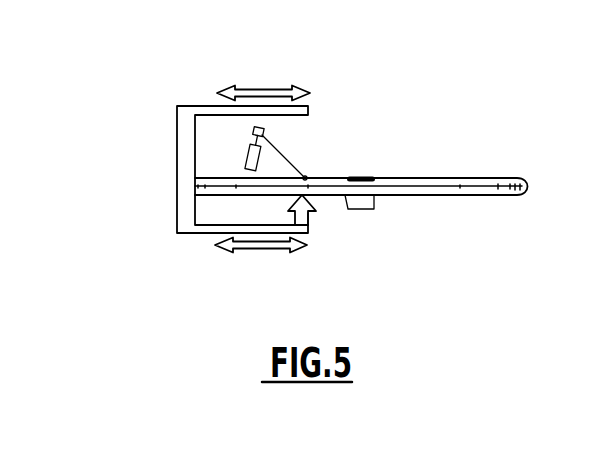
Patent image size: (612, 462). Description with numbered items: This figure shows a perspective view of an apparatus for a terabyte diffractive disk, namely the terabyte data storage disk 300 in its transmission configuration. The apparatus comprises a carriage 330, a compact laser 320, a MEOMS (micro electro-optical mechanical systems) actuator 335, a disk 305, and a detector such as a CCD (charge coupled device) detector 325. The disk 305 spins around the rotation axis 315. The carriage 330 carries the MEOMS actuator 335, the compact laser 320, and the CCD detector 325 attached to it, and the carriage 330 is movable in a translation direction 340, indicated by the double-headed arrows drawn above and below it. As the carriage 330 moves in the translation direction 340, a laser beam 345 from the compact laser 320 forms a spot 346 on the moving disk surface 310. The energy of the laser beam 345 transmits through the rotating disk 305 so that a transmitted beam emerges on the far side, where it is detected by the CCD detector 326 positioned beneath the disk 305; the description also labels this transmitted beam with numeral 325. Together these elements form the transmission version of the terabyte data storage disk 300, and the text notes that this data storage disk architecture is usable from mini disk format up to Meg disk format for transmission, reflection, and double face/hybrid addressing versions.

The terabyte data storage disk 300 is at (459, 27).
The disk 305 is at (404, 195).
The disk surface 310 is at (456, 178).
The rotation axis 315 is at (380, 176).
The compact laser 320 is at (245, 160).
The CCD detector 325 is at (310, 200).
The CCD detector 326 is at (307, 220).
The carriage 330 is at (177, 173).
The MEOMS actuator 335 is at (267, 122).
The translation direction 340 is at (240, 87).
The laser beam 345 is at (284, 152).
The spot 346 is at (306, 176).